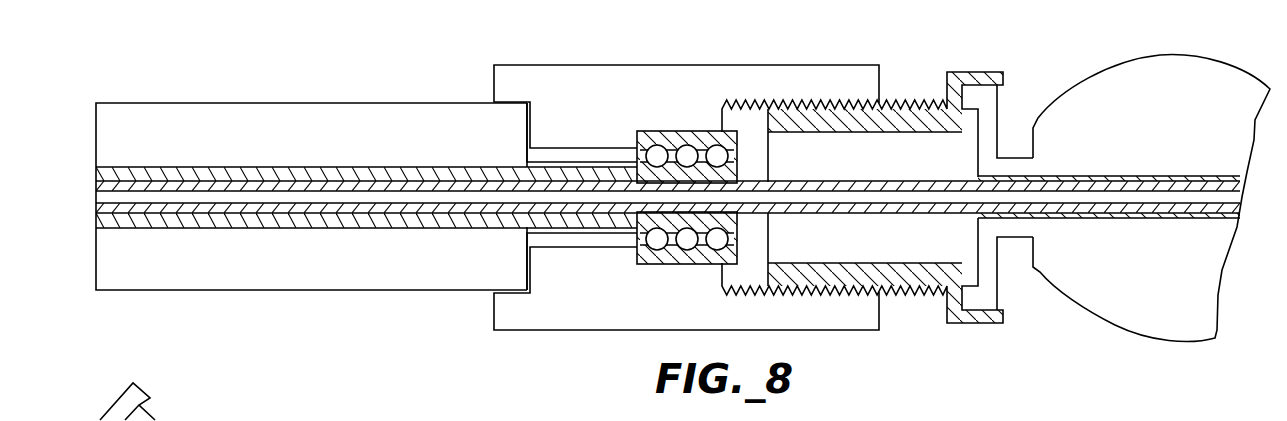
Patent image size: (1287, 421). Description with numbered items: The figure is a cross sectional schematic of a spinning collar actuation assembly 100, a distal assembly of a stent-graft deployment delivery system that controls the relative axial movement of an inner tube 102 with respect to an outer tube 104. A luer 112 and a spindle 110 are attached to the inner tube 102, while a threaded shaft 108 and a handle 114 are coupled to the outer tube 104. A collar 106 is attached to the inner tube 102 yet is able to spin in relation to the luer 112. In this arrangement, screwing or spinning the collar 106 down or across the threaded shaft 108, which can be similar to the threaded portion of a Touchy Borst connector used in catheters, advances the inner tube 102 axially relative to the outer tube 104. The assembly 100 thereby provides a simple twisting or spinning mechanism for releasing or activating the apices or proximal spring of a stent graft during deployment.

The spinning collar actuation assembly 100 is at (343, 75).
The inner tube 102 is at (393, 198).
The outer tube 104 is at (1100, 220).
The collar 106 is at (588, 75).
The threaded shaft 108 is at (903, 293).
The spindle 110 is at (207, 170).
The luer 112 is at (170, 117).
The handle 114 is at (1102, 92).